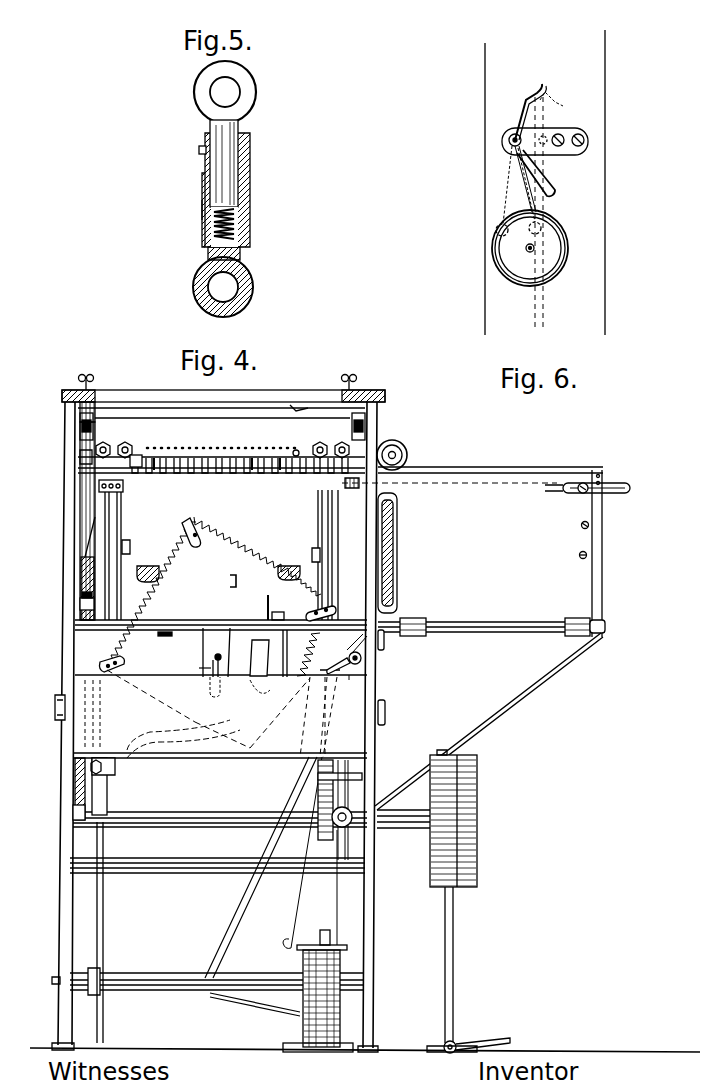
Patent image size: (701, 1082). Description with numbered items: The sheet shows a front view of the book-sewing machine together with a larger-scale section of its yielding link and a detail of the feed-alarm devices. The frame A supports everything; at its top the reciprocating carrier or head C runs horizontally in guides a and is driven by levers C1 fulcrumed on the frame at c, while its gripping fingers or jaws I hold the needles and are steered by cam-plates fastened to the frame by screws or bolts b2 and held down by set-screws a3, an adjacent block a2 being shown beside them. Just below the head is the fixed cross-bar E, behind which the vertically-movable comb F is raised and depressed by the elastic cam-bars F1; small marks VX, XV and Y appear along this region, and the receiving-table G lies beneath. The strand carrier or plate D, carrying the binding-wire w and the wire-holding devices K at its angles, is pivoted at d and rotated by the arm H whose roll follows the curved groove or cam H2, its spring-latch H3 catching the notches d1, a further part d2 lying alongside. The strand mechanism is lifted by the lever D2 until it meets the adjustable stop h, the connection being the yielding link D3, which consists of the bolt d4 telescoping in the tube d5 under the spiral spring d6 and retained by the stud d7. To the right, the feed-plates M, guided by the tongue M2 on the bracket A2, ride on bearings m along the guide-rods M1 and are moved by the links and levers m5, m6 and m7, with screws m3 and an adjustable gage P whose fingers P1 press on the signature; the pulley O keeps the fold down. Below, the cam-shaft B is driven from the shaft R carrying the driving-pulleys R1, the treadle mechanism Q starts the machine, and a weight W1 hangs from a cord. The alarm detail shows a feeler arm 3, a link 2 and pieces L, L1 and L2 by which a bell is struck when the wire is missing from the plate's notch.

In FIG. 6, the frame A is at (545, 182).
In FIG. 4, the frame A is at (365, 714).
In FIG. 4, the bracket A2 is at (489, 721).
In FIG. 4, the cam-shaft B is at (55, 707).
In FIG. 4, the reciprocating carrier or head C is at (221, 448).
In FIG. 4, the levers C1 is at (318, 522).
In FIG. 4, the fulcrum c is at (221, 550).
In FIG. 6, the strand carrier or plate D is at (545, 211).
In FIG. 4, the strand carrier or plate D is at (136, 512).
In FIG. 4, the lever D2 is at (115, 781).
In FIG. 5, the yielding link D3 is at (233, 225).
In FIG. 4, the pivot d is at (216, 652).
In FIG. 4, the ratchets or notches d1 is at (169, 638).
In FIG. 4, the plate d2 is at (240, 581).
In FIG. 5, the bolt d4 is at (238, 134).
In FIG. 5, the tube d5 is at (203, 210).
In FIG. 5, the spiral spring d6 is at (240, 229).
In FIG. 5, the stud d7 is at (199, 150).
In FIG. 4, the cross-bar E is at (240, 474).
In FIG. 4, the comb F is at (313, 445).
In FIG. 4, the elastic cam-bars F1 is at (135, 470).
In FIG. 4, the receiving-table G is at (218, 564).
In FIG. 4, the arm H is at (212, 672).
In FIG. 4, the curved groove or cam H2 is at (260, 666).
In FIG. 4, the spring-latch H3 is at (198, 668).
In FIG. 4, the adjustable stop h is at (80, 607).
In FIG. 4, the gripping fingers or jaws I is at (247, 471).
In FIG. 4, the wire-holding devices K is at (211, 630).
In FIG. 6, the lever L is at (511, 146).
In FIG. 4, the lever L is at (311, 653).
In FIG. 6, the wheel L1 is at (530, 216).
In FIG. 4, the wheel L1 is at (333, 695).
In FIG. 4, the stop L2 is at (388, 677).
In FIG. 4, the feed-plates M is at (490, 553).
In FIG. 4, the guide-rods M1 is at (491, 636).
In FIG. 4, the tongue or thin bar M2 is at (472, 469).
In FIG. 4, the bearings m is at (502, 635).
In FIG. 4, the screw m3 is at (584, 517).
In FIG. 4, the link or lever m5 is at (261, 886).
In FIG. 4, the link or lever m6 is at (348, 887).
In FIG. 4, the link or lever m7 is at (343, 810).
In FIG. 4, the guide or pulley O is at (404, 446).
In FIG. 4, the adjustable stop or gage P is at (603, 493).
In FIG. 4, the wire springs or fingers P1 is at (560, 494).
In FIG. 4, the treadle mechanism Q is at (468, 970).
In FIG. 4, the shaft R is at (241, 807).
In FIG. 4, the driving-pulleys R1 is at (453, 818).
In FIG. 4, the tooth VX is at (158, 471).
In FIG. 4, the weight W1 is at (318, 1000).
In FIG. 4, the binding-wire w is at (244, 737).
In FIG. 4, the tooth XV is at (283, 471).
In FIG. 4, the hook Y is at (298, 402).
In FIG. 4, the guides a is at (80, 457).
In FIG. 4, the block a2 is at (80, 422).
In FIG. 4, the set-screws a3 is at (218, 374).
In FIG. 4, the screws or bolts b2 is at (362, 396).
In FIG. 4, the link 2 is at (315, 611).
In FIG. 6, the lever 3 is at (530, 106).
In FIG. 4, the lever 3 is at (271, 605).